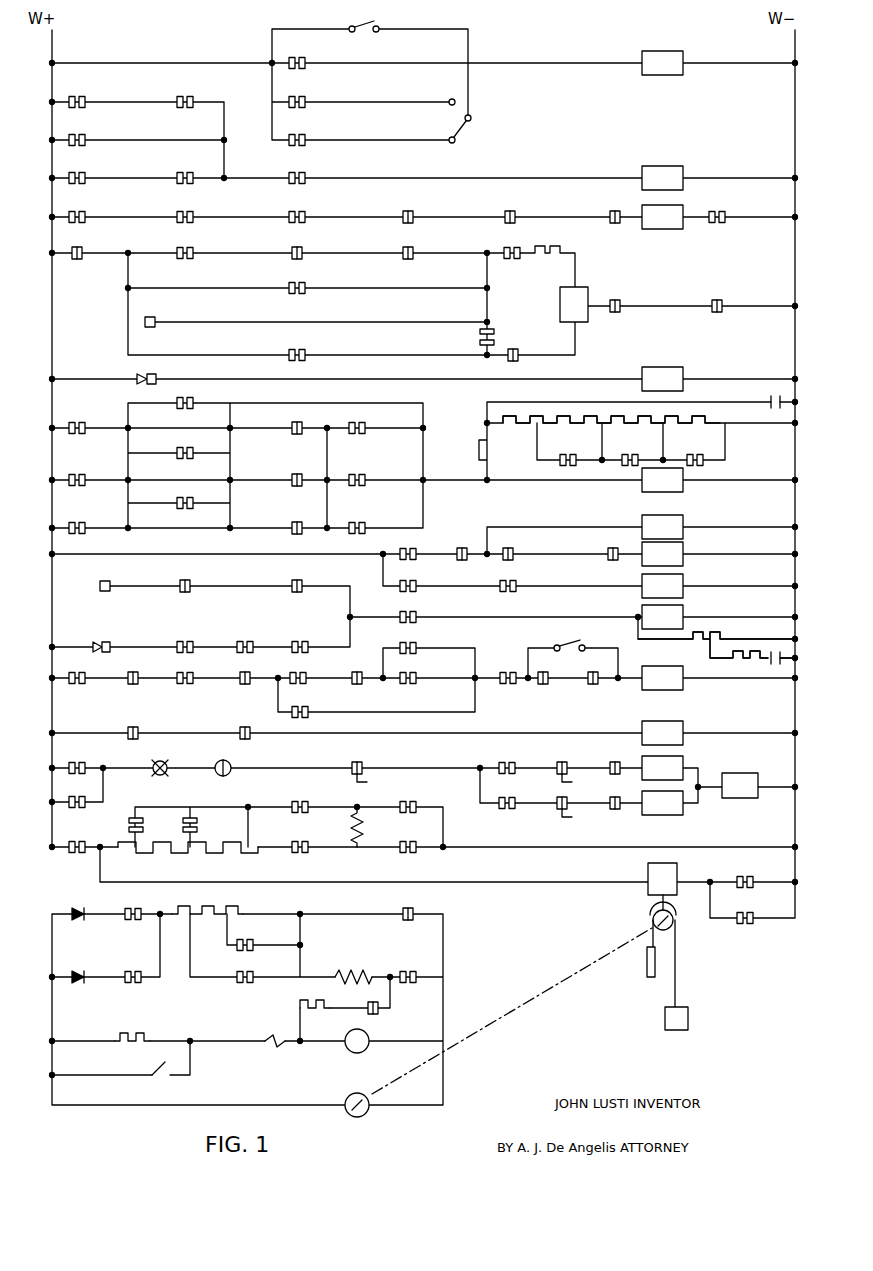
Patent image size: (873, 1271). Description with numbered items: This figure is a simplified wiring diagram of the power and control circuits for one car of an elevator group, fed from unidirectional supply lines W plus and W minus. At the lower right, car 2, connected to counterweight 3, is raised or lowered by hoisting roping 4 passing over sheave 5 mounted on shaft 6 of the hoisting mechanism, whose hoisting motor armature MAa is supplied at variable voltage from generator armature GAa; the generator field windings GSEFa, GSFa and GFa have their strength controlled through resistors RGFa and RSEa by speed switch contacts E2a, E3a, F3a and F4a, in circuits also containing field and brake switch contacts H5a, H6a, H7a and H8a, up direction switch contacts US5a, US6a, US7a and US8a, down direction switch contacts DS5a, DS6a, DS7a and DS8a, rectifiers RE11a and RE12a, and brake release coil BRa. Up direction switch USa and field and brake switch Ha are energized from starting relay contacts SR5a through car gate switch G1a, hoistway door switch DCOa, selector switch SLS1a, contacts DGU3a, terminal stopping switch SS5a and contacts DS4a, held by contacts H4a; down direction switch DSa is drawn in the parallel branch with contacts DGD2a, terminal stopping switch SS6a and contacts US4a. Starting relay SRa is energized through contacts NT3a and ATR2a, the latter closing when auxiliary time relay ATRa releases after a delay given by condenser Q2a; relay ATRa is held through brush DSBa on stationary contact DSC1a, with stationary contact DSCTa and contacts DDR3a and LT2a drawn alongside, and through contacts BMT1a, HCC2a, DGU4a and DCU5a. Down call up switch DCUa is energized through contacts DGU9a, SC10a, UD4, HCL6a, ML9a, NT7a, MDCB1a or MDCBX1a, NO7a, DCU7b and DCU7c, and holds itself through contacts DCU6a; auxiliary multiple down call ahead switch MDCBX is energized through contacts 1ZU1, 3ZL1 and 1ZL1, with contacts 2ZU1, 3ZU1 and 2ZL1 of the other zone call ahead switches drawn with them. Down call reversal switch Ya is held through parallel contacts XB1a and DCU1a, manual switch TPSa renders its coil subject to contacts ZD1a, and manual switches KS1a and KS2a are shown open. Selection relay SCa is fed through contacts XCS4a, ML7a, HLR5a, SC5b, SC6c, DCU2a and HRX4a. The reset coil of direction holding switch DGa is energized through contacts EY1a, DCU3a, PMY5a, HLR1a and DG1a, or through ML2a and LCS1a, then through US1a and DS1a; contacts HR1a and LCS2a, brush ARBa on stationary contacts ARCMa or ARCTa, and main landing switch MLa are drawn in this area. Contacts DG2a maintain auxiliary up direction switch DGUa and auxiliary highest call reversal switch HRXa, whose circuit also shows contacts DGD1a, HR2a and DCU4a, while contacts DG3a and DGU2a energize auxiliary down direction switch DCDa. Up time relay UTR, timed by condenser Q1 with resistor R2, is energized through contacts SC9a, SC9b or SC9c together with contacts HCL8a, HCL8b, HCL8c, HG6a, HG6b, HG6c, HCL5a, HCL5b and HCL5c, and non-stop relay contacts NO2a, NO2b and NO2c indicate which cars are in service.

The manual switch KS1a is at (380, 24).
The down call up switch contacts DCU1a is at (319, 57).
The highest down call zone reversal switch contacts ZD1a is at (372, 96).
The call below switch contacts XB1a is at (314, 134).
The manual switch TPSa is at (480, 123).
The down call reversal switch Ya is at (662, 63).
The upper zone call ahead switch contacts 2ZU1 is at (92, 95).
The low zone call ahead switch contacts 2ZL1 is at (200, 95).
The upper zone call ahead switch contacts 3ZU1 is at (94, 133).
The upper zone call ahead switch contacts 1ZU1 is at (95, 171).
The low zone call ahead switch contacts 3ZL1 is at (195, 169).
The low zone call ahead switch contacts 1ZL1 is at (316, 171).
The auxiliary multiple down call ahead switch MDCBX is at (662, 170).
The dispatching removal relay contacts XCS4a is at (97, 209).
The main landing switch contacts ML7a is at (203, 209).
The home landing relay contacts HLR5a is at (318, 209).
The selection relay contacts SC5b is at (431, 208).
The selection relay contacts SC6c is at (526, 208).
The down call up switch contacts DCU2a is at (610, 208).
The selection relay SCa is at (662, 217).
The auxiliary highest call reversal switch contacts HRX4a is at (735, 208).
The auxiliary speed switch contacts EY1a is at (94, 245).
The down call up switch contacts DCU3a is at (200, 245).
The pawl magnet relay contacts PMY5a is at (299, 245).
The home landing relay contacts HLR1a is at (421, 245).
The direction holding switch contacts DG1a is at (510, 245).
The direction holding switch DGa is at (574, 304).
The highest call reversal switch contacts HR1a is at (319, 281).
The stationary contact ARCTa is at (155, 318).
The main landing switch contacts ML2a is at (322, 348).
The lowest call switch contacts LCS1a is at (480, 342).
The lowest call switch contacts LCS2a is at (515, 348).
The up direction switch contacts US1a is at (634, 299).
The down direction switch contacts DS1a is at (738, 299).
The brush ARBa is at (137, 378).
The stationary contact ARCMa is at (156, 376).
The main landing switch MLa is at (662, 379).
The condenser Q1 is at (770, 398).
The resistor R2 is at (611, 412).
The non-stop relay contacts NO2a is at (566, 454).
The non-stop relay contacts NO2b is at (630, 454).
The non-stop relay contacts NO2c is at (694, 454).
The up dispatching relay contacts HCL8a is at (209, 396).
The selection relay contacts SC9a is at (93, 420).
The highest car call switch contacts HG6a is at (272, 420).
The up dispatching relay contacts HCL5a is at (379, 420).
The up dispatching relay contacts HCL8b is at (157, 446).
The selection relay contacts SC9b is at (77, 471).
The highest car call switch contacts HG6b is at (272, 470).
The up dispatching relay contacts HCL5b is at (380, 470).
The up dispatching relay contacts HCL8c is at (156, 496).
The selection relay contacts SC9c is at (78, 519).
The highest car call switch contacts HG6c is at (272, 518).
The up dispatching relay contacts HCL5c is at (378, 518).
The up time relay UTR is at (662, 480).
The direction holding switch contacts DG2a is at (388, 547).
The auxiliary down direction switch contacts DGD1a is at (459, 545).
The highest call reversal switch contacts HR2a is at (525, 545).
The down call up switch contacts DCU4a is at (585, 548).
The auxiliary up direction switch DGUa is at (662, 527).
The auxiliary highest call reversal switch HRXa is at (662, 554).
The direction holding switch contacts DG3a is at (429, 579).
The auxiliary up direction switch contacts DGU2a is at (534, 579).
The auxiliary down direction switch DCDa is at (662, 586).
The stationary contact DSCTa is at (109, 577).
The down dispatching relay contacts DDR3a is at (209, 578).
The light traffic switch contacts LT2a is at (293, 578).
The down call up switch contacts DCU5a is at (433, 610).
The auxiliary time relay ATRa is at (662, 617).
The condenser Q2a is at (770, 640).
The brush DSBa is at (96, 641).
The stationary contact DSC1a is at (132, 640).
The basement relay contacts BMT1a is at (199, 637).
The up dispatching relay contacts HCC2a is at (257, 637).
The auxiliary up direction switch contacts DGU4a is at (315, 637).
The multiple down call ahead switch contacts MDCB1a is at (436, 641).
The auxiliary multiple down call ahead switch contacts MDCBX1a is at (436, 671).
The manual switch KS2a is at (588, 639).
The auxiliary up direction switch contacts DGU9a is at (95, 670).
The selection relay contacts SC10a is at (150, 667).
The up-down traffic switch contacts UD4 is at (192, 668).
The up dispatching relay contacts HCL6a is at (243, 668).
The main landing switch contacts ML9a is at (299, 668).
The hall time switch contacts NT7a is at (357, 667).
The non-stop relay contacts NO7a is at (508, 669).
The down call up switch contacts DCU7b is at (565, 669).
The down call up switch contacts DCU7c is at (611, 687).
The down call up switch DCUa is at (662, 678).
The down call up switch contacts DCU6a is at (322, 706).
The hall time switch contacts NT3a is at (113, 725).
The auxiliary time relay contacts ATR2a is at (220, 725).
The starting relay SRa is at (662, 733).
The starting relay contacts SR5a is at (85, 759).
The field and brake switch contacts H4a is at (71, 794).
The car gate switch G1a is at (160, 760).
The hoistway door switch DCOa is at (221, 760).
The selector switch SLS1a is at (365, 763).
The auxiliary up direction switch contacts DGU3a is at (482, 759).
The terminal stopping switch SS5a is at (556, 762).
The down direction switch contacts DS4a is at (614, 758).
The up direction switch USa is at (662, 768).
The auxiliary down direction switch contacts DGD2a is at (508, 794).
The terminal stopping switch SS6a is at (552, 815).
The up direction switch contacts US4a is at (605, 794).
The down direction switch DSa is at (662, 803).
The field and brake switch Ha is at (740, 785).
The up direction switch contacts US5a is at (283, 799).
The down direction switch contacts DS5a is at (417, 799).
The field and brake switch contacts H5a is at (75, 839).
The speed switch contacts E2a is at (150, 822).
The second speed switch contacts F3a is at (205, 822).
The resistor RGFa is at (183, 855).
The down direction switch contacts DS6a is at (283, 840).
The separately excited field winding GFa is at (371, 827).
The up direction switch contacts US6a is at (417, 836).
The brake release coil BRa is at (662, 879).
The up direction switch contacts US7a is at (754, 875).
The down direction switch contacts DS7a is at (755, 911).
The rectifier RE11a is at (78, 906).
The up direction switch contacts US8a is at (139, 906).
The resistor RSEa is at (215, 903).
The field and brake switch contacts H6a is at (424, 906).
The second speed switch contacts F4a is at (258, 938).
The rectifier RE12a is at (79, 969).
The down direction switch contacts DS8a is at (129, 968).
The speed switch contacts E3a is at (226, 970).
The self-excited field winding GSEFa is at (348, 969).
The field and brake switch contacts H7a is at (413, 968).
The field and brake switch contacts H8a is at (339, 1001).
The series field winding GSFa is at (143, 1054).
The generator armature GAa is at (366, 1032).
The hoisting motor armature MAa is at (357, 1093).
The shaft 6 is at (593, 960).
The sheave 5 is at (673, 915).
The hoisting roping 4 is at (676, 950).
The counterweight 3 is at (647, 962).
The car 2 is at (688, 1015).